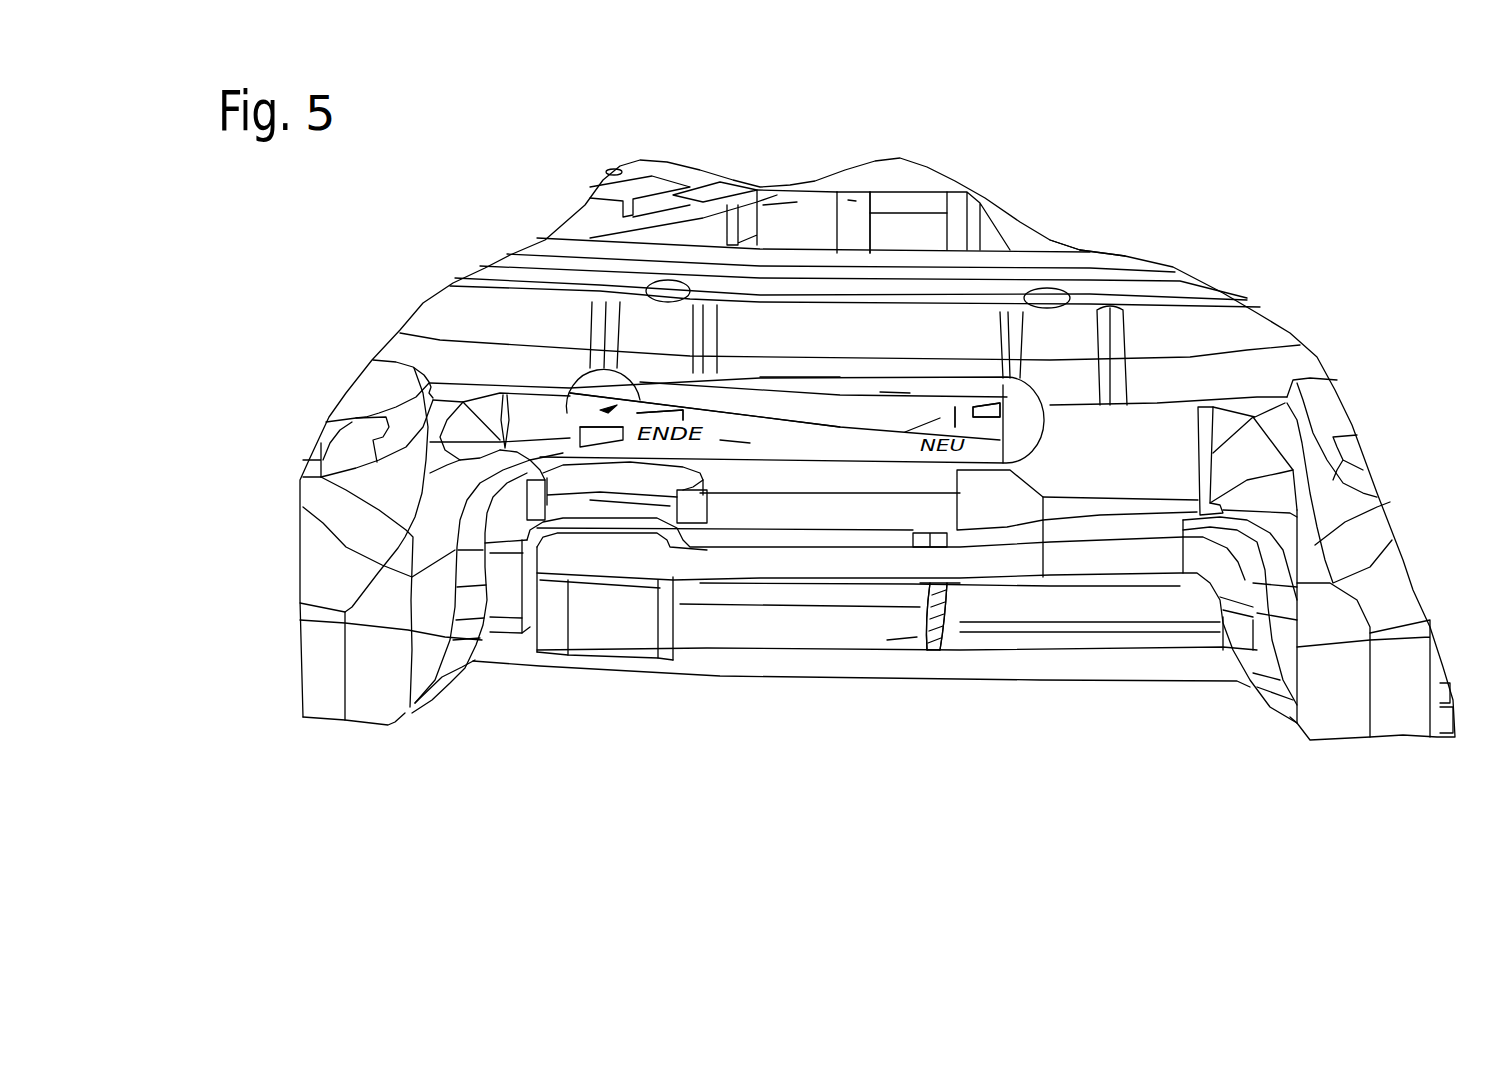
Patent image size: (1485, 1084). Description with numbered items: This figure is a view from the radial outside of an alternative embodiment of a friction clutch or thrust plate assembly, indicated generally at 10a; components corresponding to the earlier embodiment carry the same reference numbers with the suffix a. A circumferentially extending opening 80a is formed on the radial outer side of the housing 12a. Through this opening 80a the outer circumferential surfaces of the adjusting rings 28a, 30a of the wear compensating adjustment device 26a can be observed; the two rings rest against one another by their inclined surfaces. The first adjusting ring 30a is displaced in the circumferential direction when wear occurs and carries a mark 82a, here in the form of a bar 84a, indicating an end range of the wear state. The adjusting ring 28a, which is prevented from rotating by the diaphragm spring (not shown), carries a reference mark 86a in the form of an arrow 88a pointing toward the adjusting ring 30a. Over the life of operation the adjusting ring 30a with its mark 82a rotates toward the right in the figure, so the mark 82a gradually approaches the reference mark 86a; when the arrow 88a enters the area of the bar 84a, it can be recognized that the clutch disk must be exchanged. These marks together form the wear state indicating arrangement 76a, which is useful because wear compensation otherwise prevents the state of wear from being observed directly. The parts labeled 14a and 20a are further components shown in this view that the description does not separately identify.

The device 10a is at (1080, 180).
The housing 12a is at (1120, 257).
The support strut 14a is at (967, 563).
The cover 20a is at (905, 203).
The wear compensating adjustment device 26a is at (893, 385).
The adjusting ring 28a is at (790, 390).
The first adjusting ring 30a is at (735, 443).
The wear state indicating arrangement 76a is at (815, 440).
The opening 80a is at (990, 412).
The mark 82a is at (600, 412).
The bar 84a is at (650, 410).
The reference mark 86a is at (940, 417).
The arrow 88a is at (980, 408).